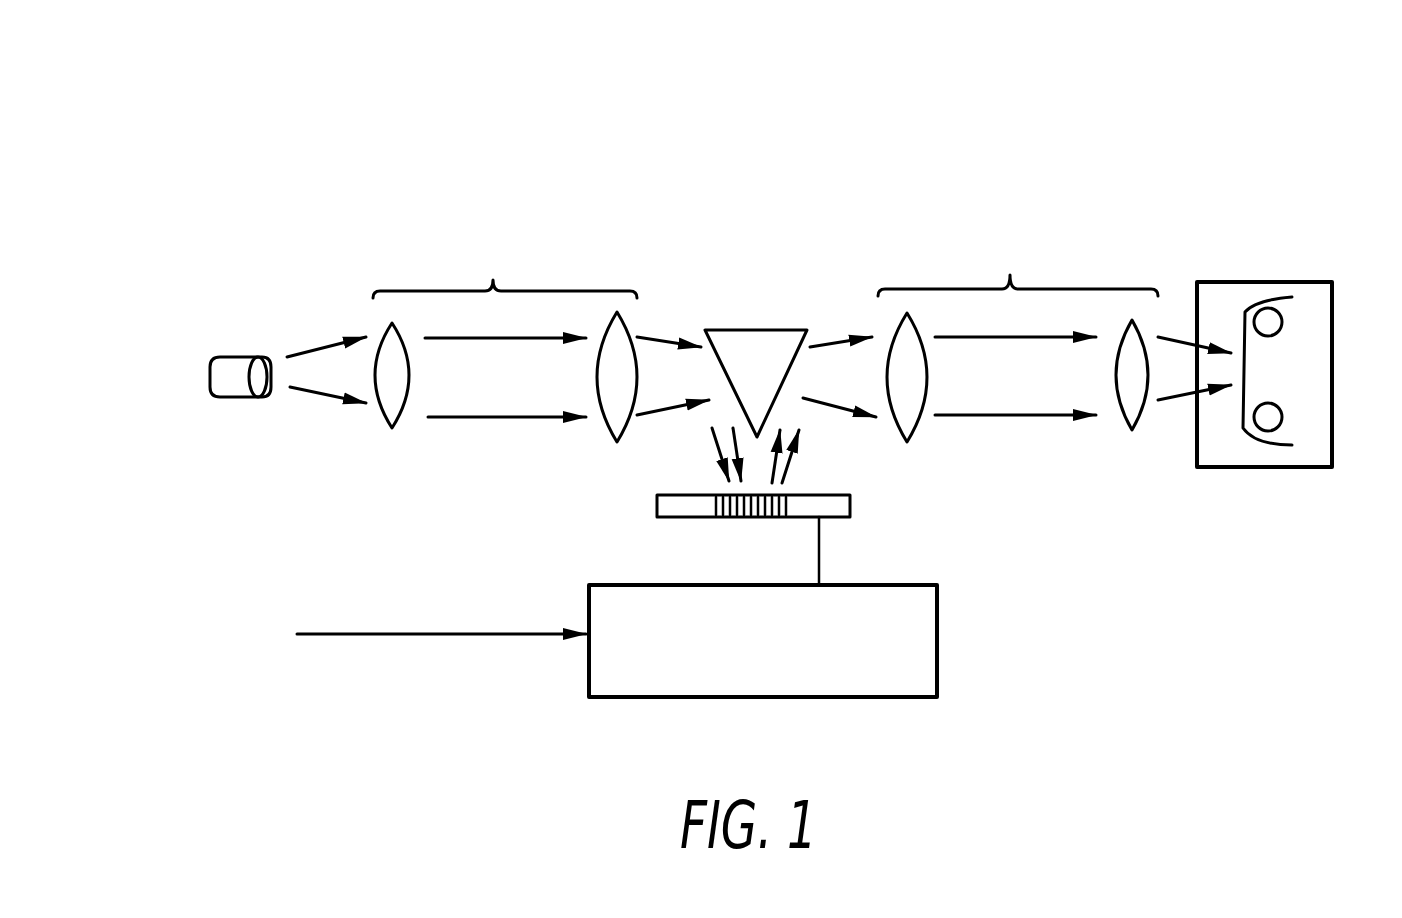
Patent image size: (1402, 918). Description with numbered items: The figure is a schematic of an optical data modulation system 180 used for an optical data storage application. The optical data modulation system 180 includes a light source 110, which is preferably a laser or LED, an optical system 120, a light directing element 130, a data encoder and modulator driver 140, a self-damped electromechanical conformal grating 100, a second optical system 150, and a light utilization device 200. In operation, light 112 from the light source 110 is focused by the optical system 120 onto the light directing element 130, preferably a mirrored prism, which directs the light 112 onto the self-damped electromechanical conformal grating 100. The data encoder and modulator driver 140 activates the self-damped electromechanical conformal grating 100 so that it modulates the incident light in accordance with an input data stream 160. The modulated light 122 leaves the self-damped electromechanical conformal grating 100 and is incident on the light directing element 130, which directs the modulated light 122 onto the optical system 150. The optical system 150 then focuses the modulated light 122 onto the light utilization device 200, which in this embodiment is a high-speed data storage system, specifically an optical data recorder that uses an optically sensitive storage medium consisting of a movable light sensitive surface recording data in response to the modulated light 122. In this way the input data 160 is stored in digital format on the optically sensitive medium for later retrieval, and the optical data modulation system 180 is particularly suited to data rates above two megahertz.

The self-damped electromechanical conformal grating 100 is at (864, 507).
The light source 110 is at (237, 357).
The light 112 is at (313, 397).
The optical system 120 is at (541, 339).
The modulated light 122 is at (797, 457).
The light directing element 130 is at (771, 310).
The data encoder and modulator driver 140 is at (888, 697).
The optical system 150 is at (980, 338).
The input data stream 160 is at (410, 637).
The optical data modulation system 180 is at (556, 194).
The light utilization device 200 is at (1290, 282).